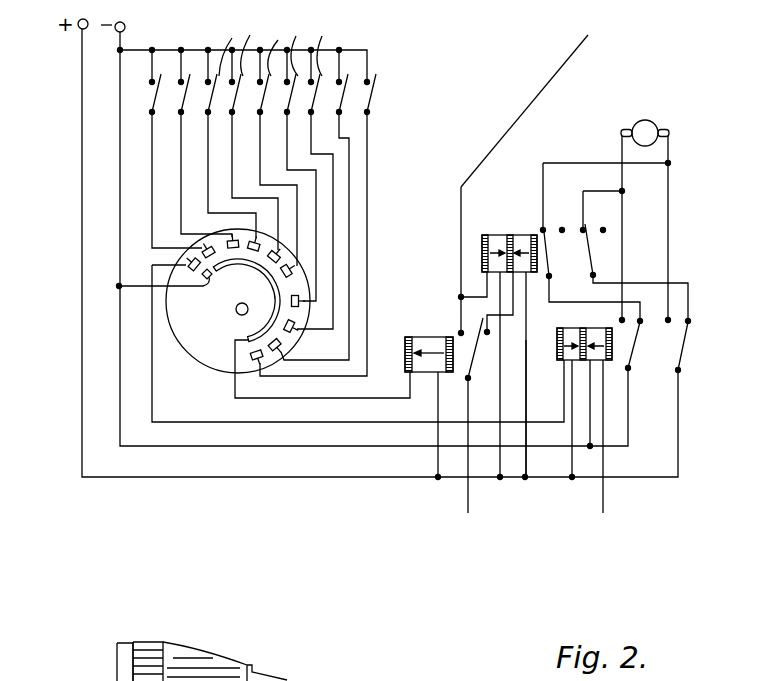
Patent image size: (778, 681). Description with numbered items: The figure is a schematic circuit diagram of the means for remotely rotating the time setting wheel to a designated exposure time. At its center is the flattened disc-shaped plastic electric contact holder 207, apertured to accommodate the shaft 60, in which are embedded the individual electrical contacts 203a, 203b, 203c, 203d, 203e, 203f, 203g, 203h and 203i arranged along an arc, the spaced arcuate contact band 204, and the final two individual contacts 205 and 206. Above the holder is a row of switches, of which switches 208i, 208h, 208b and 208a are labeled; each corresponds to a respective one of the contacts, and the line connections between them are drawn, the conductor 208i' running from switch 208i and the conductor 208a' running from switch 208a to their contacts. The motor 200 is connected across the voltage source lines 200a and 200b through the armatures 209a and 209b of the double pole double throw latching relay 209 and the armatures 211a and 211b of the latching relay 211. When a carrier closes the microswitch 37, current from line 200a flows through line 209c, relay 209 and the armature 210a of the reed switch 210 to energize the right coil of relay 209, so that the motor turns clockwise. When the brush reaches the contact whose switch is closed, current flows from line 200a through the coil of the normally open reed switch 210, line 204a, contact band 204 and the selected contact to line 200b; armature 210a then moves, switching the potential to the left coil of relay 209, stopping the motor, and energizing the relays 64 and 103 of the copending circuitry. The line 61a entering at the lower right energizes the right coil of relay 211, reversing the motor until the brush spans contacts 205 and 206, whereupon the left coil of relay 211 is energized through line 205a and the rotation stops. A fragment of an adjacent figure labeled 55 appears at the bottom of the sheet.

The motor 200 is at (648, 122).
The line 200a is at (82, 71).
The line 200b is at (120, 103).
The electrical contact 203a is at (255, 368).
The electrical contact 203b is at (287, 352).
The electrical contact 203c is at (292, 329).
The electrical contact 203d is at (300, 302).
The electrical contact 203e is at (290, 275).
The electrical contact 203f is at (280, 258).
The electrical contact 203g is at (255, 237).
The electrical contact 203h is at (231, 238).
The electrical contact 203i is at (203, 249).
The arcuate contact band 204 is at (244, 263).
The line 204a is at (375, 398).
The electrical contact 205 is at (188, 260).
The line 205a is at (315, 409).
The electrical contact 206 is at (164, 289).
The electric contact holder 207 is at (193, 344).
The switch 208a is at (372, 63).
The conductor from switch 208a 208a' is at (345, 244).
The switch 208b is at (350, 76).
The switch 208h is at (192, 76).
The switch 208i is at (224, 63).
The conductor from switch 208i 208i' is at (114, 180).
The double pole double throw latching relay 209 is at (515, 216).
The armature 209a is at (549, 240).
The armature 209b is at (592, 250).
The line 209c is at (530, 342).
The reed switch 210 is at (427, 341).
The armature 210a is at (472, 345).
The double pole double throw latching relay 211 is at (578, 312).
The armature 211a is at (636, 352).
The armature 211b is at (685, 352).
The shaft 60 is at (242, 311).
The relay 64 is at (511, 111).
The relay 103 is at (483, 72).
The microswitch 37 is at (475, 561).
The line 61a is at (605, 547).
The housing (adjacent figure) 55 is at (185, 660).